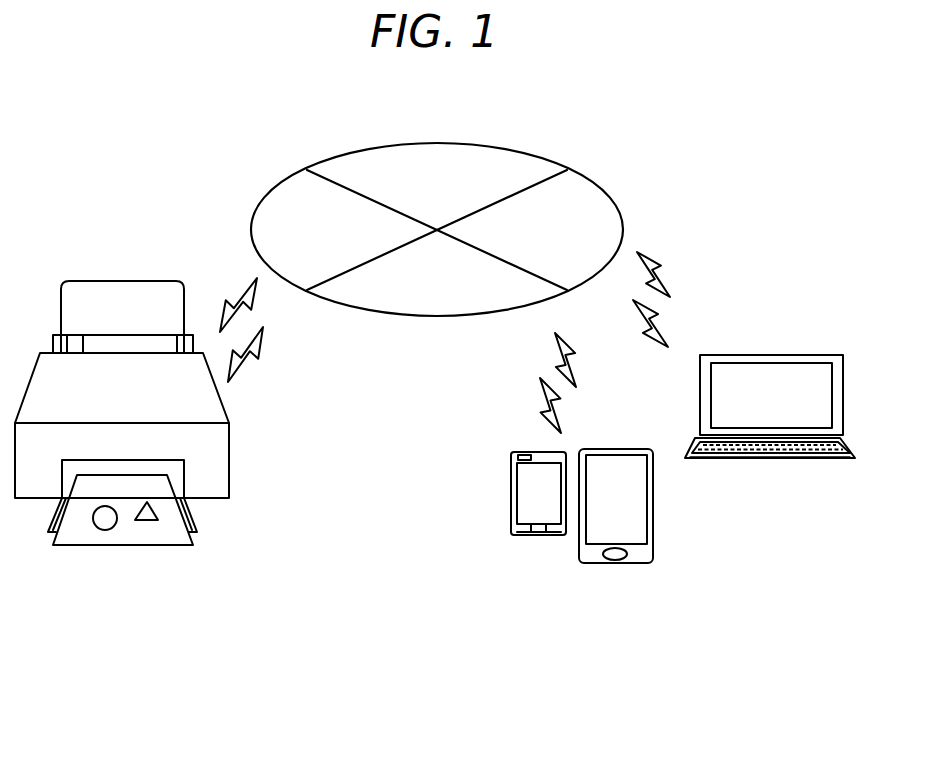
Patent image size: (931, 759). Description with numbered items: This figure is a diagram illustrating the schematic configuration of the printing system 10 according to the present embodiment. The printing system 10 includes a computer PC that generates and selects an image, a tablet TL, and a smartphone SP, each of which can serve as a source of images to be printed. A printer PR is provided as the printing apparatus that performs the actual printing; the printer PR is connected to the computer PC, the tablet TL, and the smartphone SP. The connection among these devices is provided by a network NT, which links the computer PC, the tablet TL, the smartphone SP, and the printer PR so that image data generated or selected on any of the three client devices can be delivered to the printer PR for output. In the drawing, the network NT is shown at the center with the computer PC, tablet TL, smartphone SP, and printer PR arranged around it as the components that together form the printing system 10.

The printing system 10 is at (200, 145).
The network NT is at (437, 229).
The printer PR is at (229, 458).
The personal computer PC is at (774, 355).
The smartphone SP is at (538, 537).
The tablet terminal TL is at (625, 565).